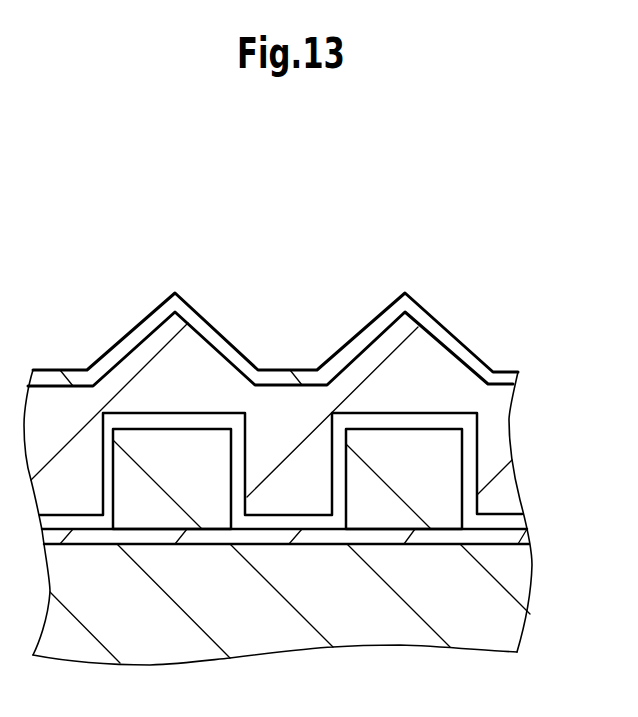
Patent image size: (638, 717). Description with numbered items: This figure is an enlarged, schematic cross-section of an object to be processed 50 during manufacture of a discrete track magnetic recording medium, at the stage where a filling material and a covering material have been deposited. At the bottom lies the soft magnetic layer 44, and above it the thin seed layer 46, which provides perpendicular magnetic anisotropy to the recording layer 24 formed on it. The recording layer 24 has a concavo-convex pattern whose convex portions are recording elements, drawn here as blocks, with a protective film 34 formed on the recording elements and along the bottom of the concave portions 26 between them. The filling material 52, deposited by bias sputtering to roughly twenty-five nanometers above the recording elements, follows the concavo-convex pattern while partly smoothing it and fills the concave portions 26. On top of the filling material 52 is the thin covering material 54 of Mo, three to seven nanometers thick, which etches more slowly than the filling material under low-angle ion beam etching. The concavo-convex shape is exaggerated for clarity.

The object to be processed 50 is at (293, 240).
The recording layer 24 is at (530, 473).
The concave portions 26 is at (288, 450).
The protective film 34 is at (184, 421).
The soft magnetic layer 44 is at (532, 605).
The seed layer 46 is at (529, 538).
The filling material 52 is at (512, 437).
The covering material 54 is at (518, 374).